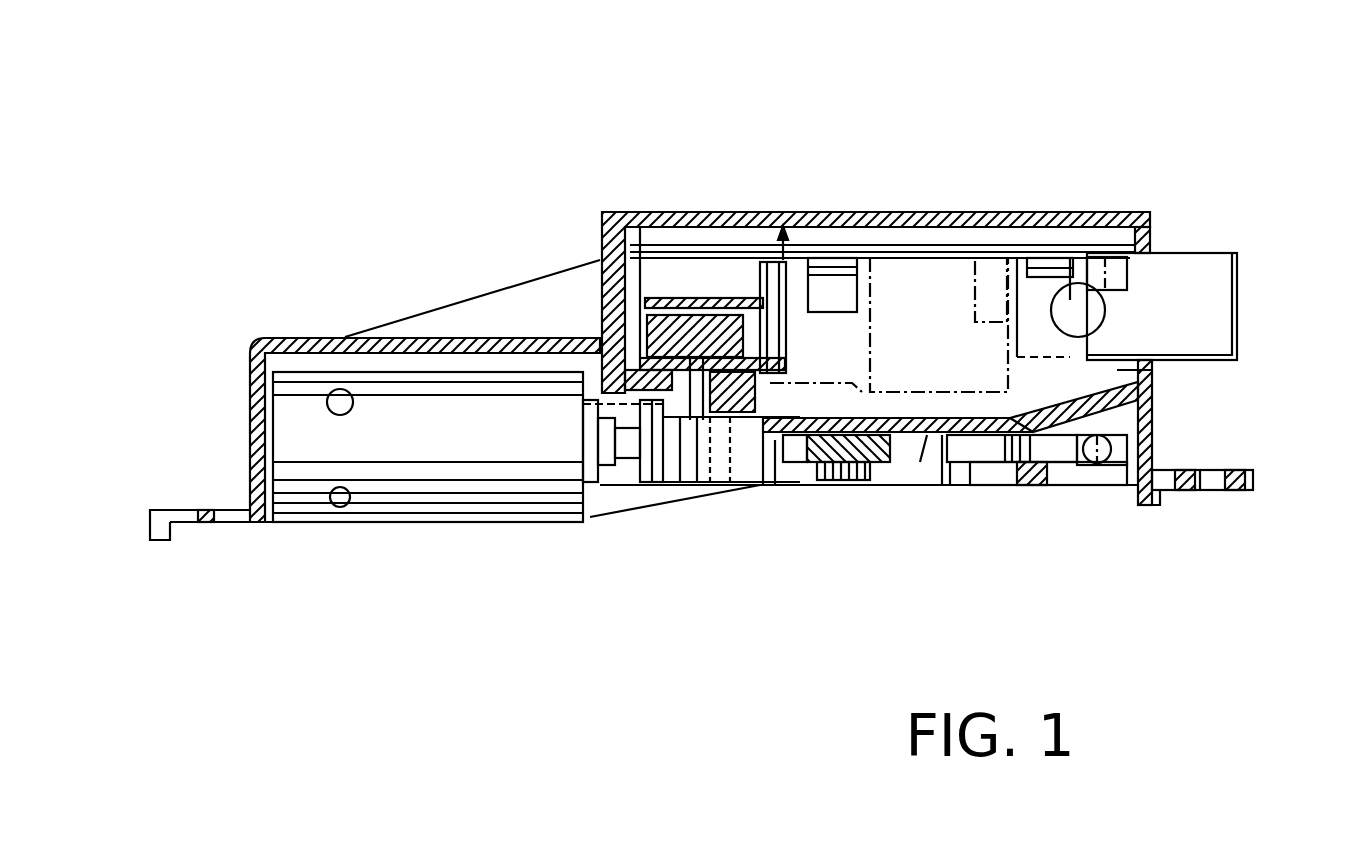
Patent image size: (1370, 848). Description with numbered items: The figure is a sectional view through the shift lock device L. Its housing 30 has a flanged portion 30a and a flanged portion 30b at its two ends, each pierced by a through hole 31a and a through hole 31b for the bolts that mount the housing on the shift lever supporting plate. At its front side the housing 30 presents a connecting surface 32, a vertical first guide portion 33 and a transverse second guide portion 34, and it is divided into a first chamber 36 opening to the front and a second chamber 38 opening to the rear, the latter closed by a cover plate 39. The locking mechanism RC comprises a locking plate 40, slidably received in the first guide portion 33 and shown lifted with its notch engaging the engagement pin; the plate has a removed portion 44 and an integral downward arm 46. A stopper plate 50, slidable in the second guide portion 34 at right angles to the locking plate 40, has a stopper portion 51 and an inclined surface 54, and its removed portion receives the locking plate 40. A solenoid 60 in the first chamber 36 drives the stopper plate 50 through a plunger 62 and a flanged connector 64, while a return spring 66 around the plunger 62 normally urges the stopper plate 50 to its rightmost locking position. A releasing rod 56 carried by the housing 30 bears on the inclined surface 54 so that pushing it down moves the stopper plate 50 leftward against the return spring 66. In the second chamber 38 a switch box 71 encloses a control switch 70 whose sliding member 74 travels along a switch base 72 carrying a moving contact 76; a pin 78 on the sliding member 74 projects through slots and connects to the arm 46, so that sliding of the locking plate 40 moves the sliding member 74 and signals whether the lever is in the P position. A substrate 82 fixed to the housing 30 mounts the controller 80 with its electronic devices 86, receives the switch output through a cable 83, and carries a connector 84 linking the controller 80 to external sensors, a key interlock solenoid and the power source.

The shift lock device L is at (568, 190).
The housing 30 is at (600, 298).
The flanged portion 30a is at (175, 512).
The flanged portion 30b is at (1228, 470).
The through hole 31a is at (215, 510).
The through hole 31b is at (1208, 490).
The connecting surface 32 is at (1005, 490).
The first guide portion 33 is at (873, 437).
The second guide portion 34 is at (965, 470).
The first chamber 36 is at (400, 358).
The second chamber 38 is at (1152, 372).
The cover plate 39 is at (1066, 214).
The locking plate 40 is at (855, 464).
The removed portion 44 is at (805, 470).
The arm 46 is at (877, 417).
The stopper plate 50 is at (940, 462).
The stopper portion 51 is at (778, 470).
The inclined surface 54 is at (1120, 448).
The releasing rod 56 is at (1097, 462).
The solenoid 60 is at (425, 495).
The plunger 62 is at (625, 505).
The flanged connector 64 is at (648, 490).
The return spring 66 is at (593, 490).
The control switch 70 is at (664, 270).
The switch box 71 is at (787, 330).
The switch base 72 is at (723, 305).
The sliding member 74 is at (657, 340).
The moving contact 76 is at (683, 297).
The pin 78 is at (700, 425).
The controller 80 is at (941, 240).
The substrate 82 is at (843, 256).
The cable 83 is at (771, 232).
The connector 84 is at (1213, 298).
The electronic devices 86 is at (992, 270).
The locking mechanism RC is at (737, 520).